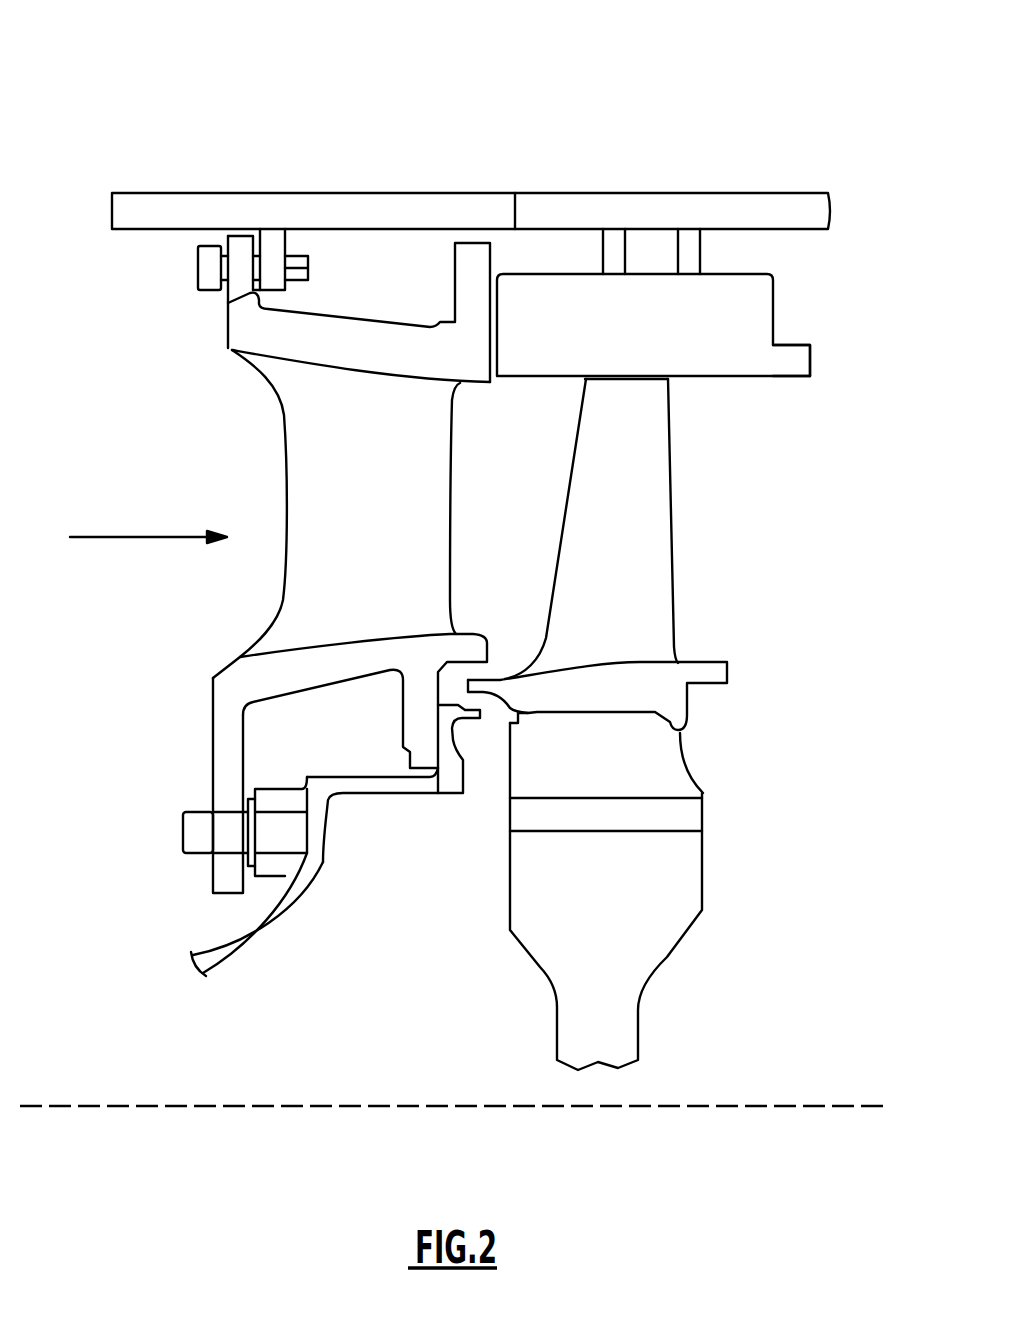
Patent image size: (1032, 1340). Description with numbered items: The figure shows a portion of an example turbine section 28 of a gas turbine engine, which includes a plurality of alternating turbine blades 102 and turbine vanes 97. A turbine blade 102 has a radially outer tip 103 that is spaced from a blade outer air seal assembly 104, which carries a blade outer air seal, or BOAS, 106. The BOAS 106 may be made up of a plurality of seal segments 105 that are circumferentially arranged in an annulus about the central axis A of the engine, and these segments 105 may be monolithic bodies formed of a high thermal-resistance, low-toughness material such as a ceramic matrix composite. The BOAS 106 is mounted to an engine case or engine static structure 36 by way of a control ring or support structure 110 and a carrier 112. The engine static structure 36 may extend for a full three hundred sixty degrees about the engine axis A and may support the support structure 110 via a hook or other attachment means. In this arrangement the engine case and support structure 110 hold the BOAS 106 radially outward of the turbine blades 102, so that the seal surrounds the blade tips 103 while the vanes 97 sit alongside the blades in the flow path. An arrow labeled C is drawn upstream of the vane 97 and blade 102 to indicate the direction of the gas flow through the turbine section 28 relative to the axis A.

The turbine section 28 is at (752, 81).
The engine static structure 36 is at (176, 212).
The support structure 110 is at (558, 205).
The carrier 112 is at (615, 252).
The blade outer air seal assembly 104 is at (828, 291).
The seal segments 105 is at (796, 350).
The blade outer air seal 106 is at (793, 365).
The radially outer tip 103 is at (653, 379).
The turbine blade 102 is at (657, 498).
The turbine vane 97 is at (459, 353).
The core flow direction C is at (98, 535).
The central axis A is at (822, 1106).